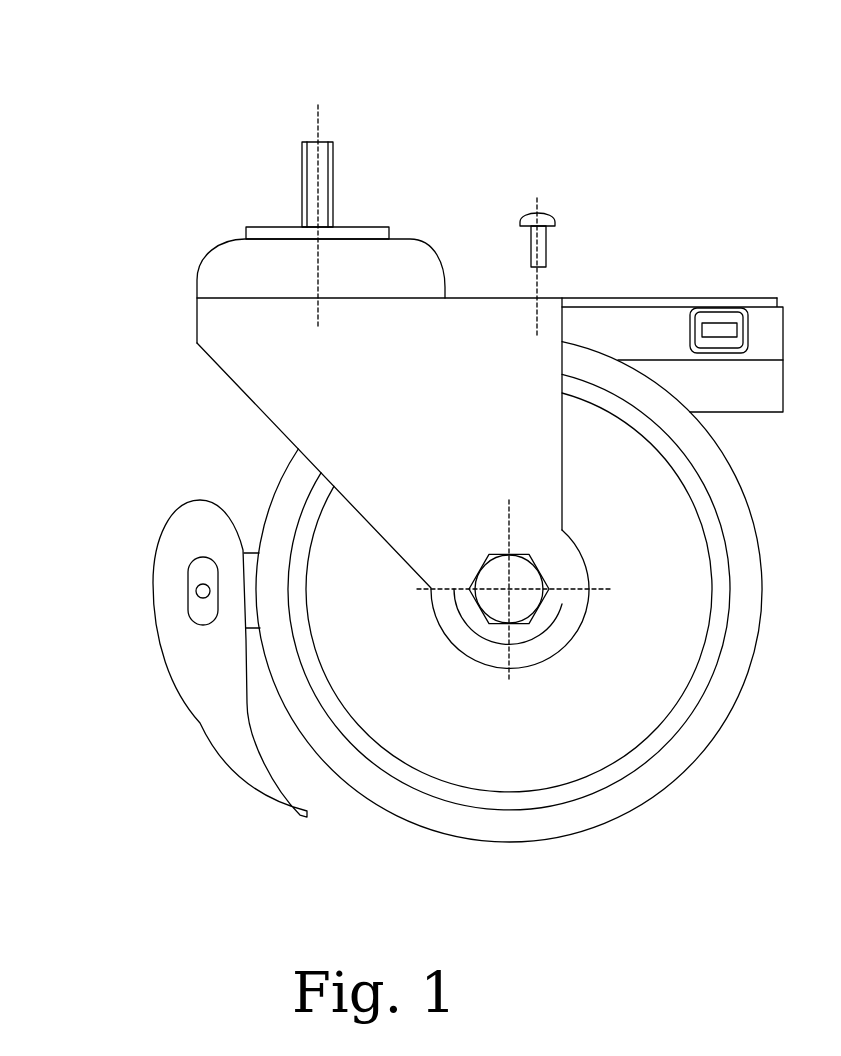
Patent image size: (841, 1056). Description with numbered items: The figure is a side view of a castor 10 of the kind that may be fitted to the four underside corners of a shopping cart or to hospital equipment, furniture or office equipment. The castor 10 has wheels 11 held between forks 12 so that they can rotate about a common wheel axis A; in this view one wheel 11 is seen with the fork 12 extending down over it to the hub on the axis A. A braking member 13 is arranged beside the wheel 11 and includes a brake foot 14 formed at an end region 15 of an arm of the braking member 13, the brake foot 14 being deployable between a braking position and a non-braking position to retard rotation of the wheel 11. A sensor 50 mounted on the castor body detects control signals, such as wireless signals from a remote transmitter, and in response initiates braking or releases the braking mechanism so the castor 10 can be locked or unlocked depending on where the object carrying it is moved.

The castor 10 is at (661, 98).
The wheel 11 is at (647, 780).
The fork 12 is at (228, 376).
The braking member 13 is at (167, 640).
The brake foot 14 is at (208, 712).
The end region 15 is at (245, 512).
The sensor 50 is at (725, 328).
The wheel axis A is at (508, 589).